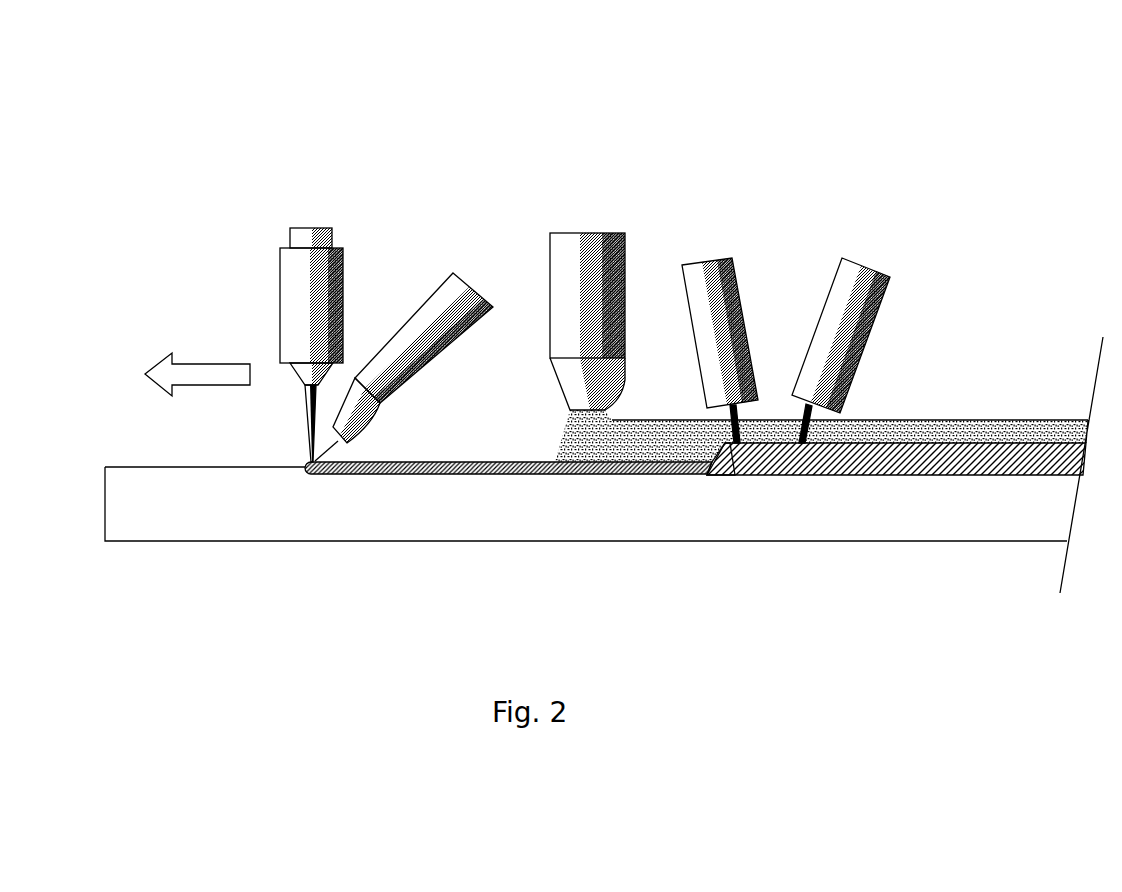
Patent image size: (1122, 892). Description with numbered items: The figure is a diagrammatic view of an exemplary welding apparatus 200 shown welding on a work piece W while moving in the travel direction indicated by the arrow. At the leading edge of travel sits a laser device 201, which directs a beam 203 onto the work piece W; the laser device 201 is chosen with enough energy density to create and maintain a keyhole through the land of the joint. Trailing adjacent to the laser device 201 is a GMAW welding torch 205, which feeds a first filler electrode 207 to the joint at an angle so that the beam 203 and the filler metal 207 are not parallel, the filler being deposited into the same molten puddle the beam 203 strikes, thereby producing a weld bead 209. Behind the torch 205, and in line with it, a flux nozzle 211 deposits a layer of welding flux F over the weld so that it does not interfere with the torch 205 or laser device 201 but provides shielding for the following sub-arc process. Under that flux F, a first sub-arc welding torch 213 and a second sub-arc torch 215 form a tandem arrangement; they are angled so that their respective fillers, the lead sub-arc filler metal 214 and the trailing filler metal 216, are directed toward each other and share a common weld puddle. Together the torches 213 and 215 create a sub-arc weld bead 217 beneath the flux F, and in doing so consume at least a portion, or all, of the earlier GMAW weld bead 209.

The welding apparatus 200 is at (850, 132).
The laser device 201 is at (305, 227).
The beam 203 is at (307, 422).
The GMAW welding torch 205 is at (413, 303).
The first filler electrode 207 is at (353, 475).
The weld bead 209 is at (508, 540).
The flux nozzle 211 is at (557, 233).
The first sub-arc welding torch 213 is at (715, 258).
The sub-arc filler metal 214 is at (713, 468).
The second sub-arc torch 215 is at (878, 260).
The trailing filler metal 216 is at (807, 410).
The sub-arc weld bead 217 is at (880, 477).
The welding flux F is at (940, 420).
The work piece W is at (985, 527).